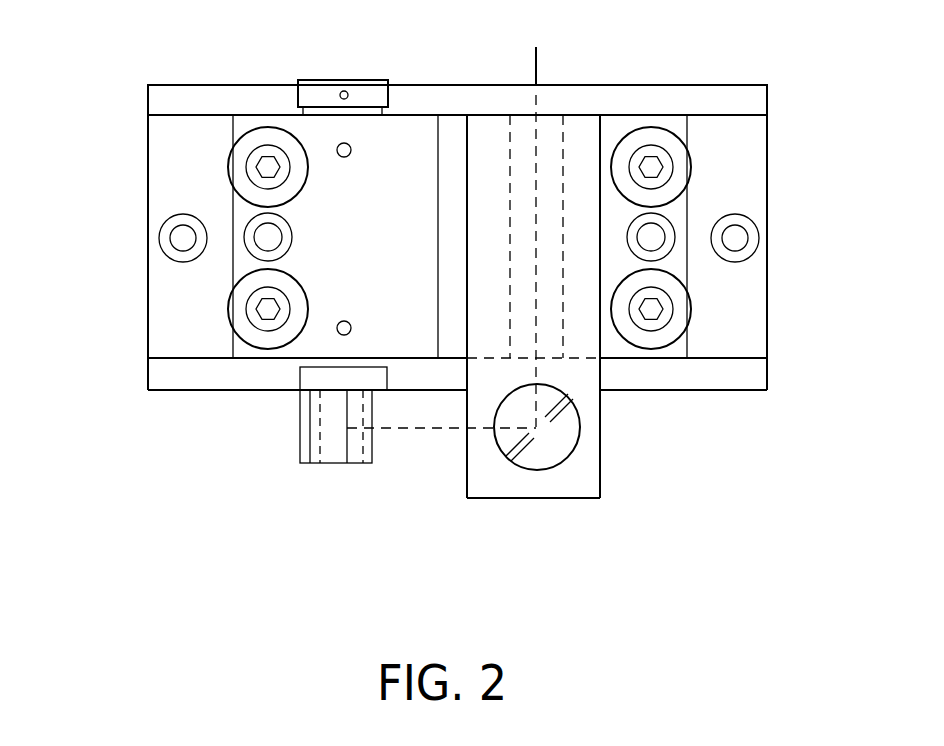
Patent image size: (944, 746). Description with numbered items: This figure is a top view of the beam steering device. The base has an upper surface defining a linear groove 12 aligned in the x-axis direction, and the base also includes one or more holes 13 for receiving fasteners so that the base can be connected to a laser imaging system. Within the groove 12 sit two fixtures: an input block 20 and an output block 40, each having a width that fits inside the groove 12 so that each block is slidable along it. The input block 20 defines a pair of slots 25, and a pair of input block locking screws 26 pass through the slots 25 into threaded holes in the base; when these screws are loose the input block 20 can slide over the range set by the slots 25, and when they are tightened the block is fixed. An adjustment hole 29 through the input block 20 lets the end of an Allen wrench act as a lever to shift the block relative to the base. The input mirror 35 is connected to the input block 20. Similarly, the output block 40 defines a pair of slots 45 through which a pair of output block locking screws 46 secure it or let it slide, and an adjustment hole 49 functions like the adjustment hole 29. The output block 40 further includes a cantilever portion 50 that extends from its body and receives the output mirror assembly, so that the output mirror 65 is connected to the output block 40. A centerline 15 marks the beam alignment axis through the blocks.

The linear groove 12 is at (157, 150).
The holes 13 is at (163, 238).
The axis centerline 15 is at (536, 72).
The input block 20 is at (277, 113).
The slots 25 is at (50, 397).
The input block locking screws 26 is at (228, 167).
The adjustment hole 29 is at (293, 237).
The input mirror 35 is at (340, 463).
The output block 40 is at (637, 115).
The slots 45 is at (865, 397).
The output block locking screws 46 is at (692, 167).
The adjustment hole 49 is at (627, 237).
The cantilever portion 50 is at (493, 498).
The output mirror 65 is at (528, 435).